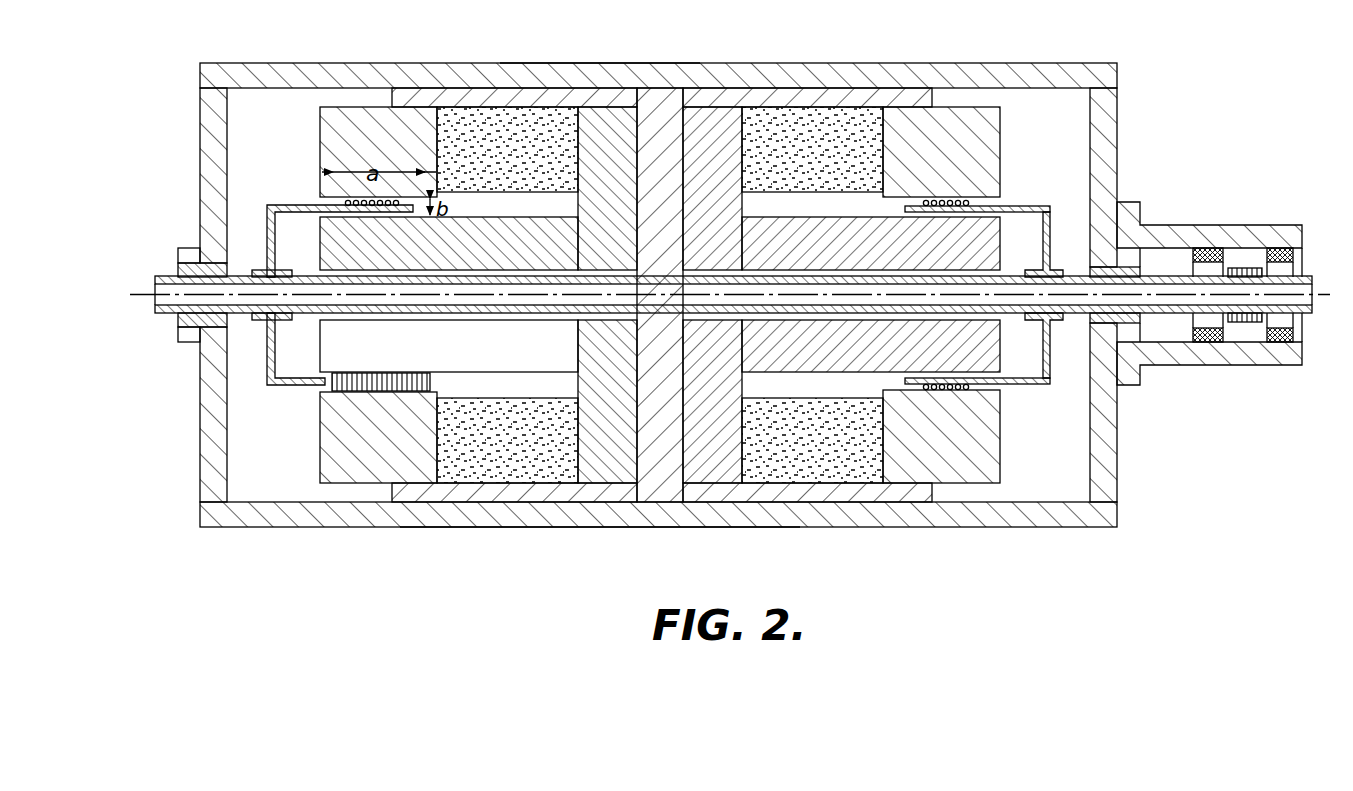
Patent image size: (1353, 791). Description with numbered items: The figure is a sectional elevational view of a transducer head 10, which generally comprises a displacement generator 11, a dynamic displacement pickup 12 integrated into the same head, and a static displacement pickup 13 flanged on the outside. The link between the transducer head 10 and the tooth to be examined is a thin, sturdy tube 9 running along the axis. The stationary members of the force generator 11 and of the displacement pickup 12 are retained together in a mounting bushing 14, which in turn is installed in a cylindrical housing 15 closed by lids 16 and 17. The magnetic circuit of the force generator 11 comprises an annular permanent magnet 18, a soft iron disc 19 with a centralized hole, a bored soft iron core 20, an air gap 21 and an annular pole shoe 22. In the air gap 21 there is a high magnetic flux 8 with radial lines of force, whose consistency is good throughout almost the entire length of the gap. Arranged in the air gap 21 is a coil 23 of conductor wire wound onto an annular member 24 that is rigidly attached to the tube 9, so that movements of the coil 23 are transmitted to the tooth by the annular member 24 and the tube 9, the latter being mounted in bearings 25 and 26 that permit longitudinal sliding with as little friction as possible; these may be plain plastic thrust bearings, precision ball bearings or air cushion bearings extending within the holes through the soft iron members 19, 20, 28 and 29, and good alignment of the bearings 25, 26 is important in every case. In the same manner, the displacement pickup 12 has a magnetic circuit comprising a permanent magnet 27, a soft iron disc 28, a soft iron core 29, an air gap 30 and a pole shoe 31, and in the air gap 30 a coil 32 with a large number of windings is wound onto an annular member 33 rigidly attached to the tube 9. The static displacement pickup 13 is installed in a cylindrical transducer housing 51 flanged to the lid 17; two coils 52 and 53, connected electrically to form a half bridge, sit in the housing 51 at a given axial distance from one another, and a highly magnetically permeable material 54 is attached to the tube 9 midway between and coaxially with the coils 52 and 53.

The magnetic flux 8 is at (395, 392).
The tube 9 is at (163, 290).
The transducer head 10 is at (610, 530).
The displacement generator 11 is at (410, 60).
The dynamic displacement pickup 12 is at (895, 57).
The static displacement pickup 13 is at (1209, 291).
The mounting bushing 14 is at (657, 105).
The cylindrical housing 15 is at (570, 78).
The lid 16 is at (212, 160).
The lid 17 is at (1105, 132).
The annular permanent magnet 18 is at (482, 120).
The soft iron disc 19 is at (606, 118).
The soft iron core 20 is at (490, 235).
The air gap 21 is at (320, 203).
The annular pole shoe 22 is at (340, 107).
The coil 23 is at (388, 212).
The annular member 24 is at (270, 216).
The bearing 25 is at (178, 316).
The bearing 26 is at (1092, 318).
The permanent magnet 27 is at (793, 115).
The soft iron disc 28 is at (706, 113).
The soft iron core 29 is at (810, 230).
The air gap 30 is at (988, 206).
The pole shoe 31 is at (1002, 113).
The coil 32 is at (936, 200).
The annular member 33 is at (1048, 226).
The cylindrical transducer housing 51 is at (1168, 232).
The coil 52 is at (1208, 345).
The coil 53 is at (1276, 345).
The highly magnetically permeable material 54 is at (1245, 325).